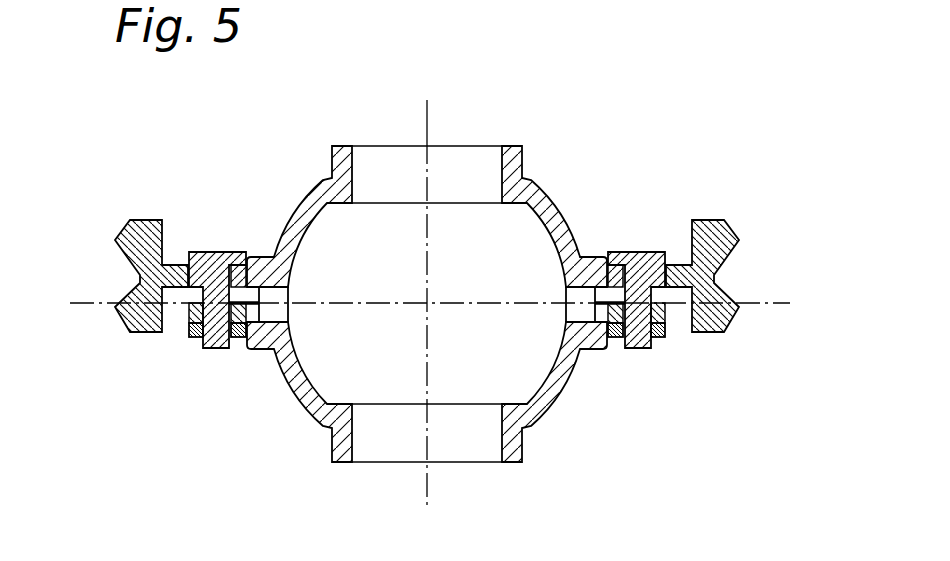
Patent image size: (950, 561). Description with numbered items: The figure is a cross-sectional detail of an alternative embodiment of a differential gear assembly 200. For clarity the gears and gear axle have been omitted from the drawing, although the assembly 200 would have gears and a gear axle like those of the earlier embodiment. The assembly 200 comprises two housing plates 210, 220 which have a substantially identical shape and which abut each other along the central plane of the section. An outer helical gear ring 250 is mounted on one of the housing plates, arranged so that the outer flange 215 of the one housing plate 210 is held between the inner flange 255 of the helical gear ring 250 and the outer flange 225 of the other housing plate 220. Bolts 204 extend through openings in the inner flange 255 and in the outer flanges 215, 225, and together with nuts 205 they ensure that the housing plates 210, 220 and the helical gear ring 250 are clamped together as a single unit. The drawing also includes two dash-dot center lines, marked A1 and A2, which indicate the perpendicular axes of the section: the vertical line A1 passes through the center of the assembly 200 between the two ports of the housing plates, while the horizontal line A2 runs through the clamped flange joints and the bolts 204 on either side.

The differential gear assembly 200 is at (428, 263).
The bolt 204 is at (655, 252).
The nut 205 is at (658, 350).
The housing plate 210 is at (537, 190).
The outer flange 215 is at (713, 290).
The housing plate 220 is at (545, 410).
The outer flange 225 is at (668, 323).
The outer helical gear ring 250 is at (449, 271).
The inner flange 255 is at (612, 262).
The first axis A1 is at (428, 108).
The second axis A2 is at (80, 303).